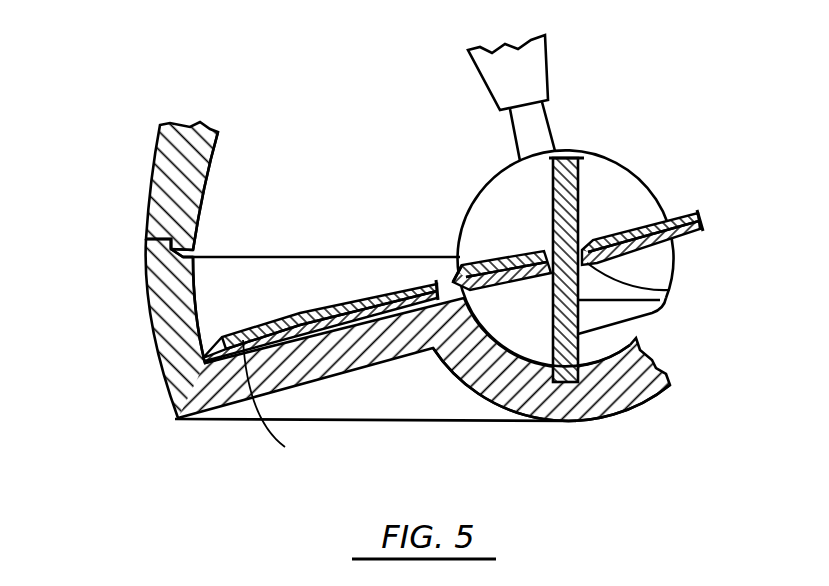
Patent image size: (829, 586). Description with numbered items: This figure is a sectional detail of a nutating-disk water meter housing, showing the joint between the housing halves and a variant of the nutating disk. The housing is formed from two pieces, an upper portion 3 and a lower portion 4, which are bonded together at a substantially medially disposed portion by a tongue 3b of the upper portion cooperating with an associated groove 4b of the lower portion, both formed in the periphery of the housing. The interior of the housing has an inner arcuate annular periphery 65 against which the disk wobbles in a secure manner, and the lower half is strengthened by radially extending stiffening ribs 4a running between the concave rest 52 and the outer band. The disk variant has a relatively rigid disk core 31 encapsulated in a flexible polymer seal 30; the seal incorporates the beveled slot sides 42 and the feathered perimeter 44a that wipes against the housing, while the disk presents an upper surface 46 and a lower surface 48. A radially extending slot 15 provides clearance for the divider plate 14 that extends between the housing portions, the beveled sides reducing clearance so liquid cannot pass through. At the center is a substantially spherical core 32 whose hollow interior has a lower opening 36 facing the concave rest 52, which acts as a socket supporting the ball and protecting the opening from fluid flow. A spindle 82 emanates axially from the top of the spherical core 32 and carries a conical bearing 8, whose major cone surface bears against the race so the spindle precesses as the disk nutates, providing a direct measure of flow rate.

The upper portion 3 is at (152, 165).
The inner arcuate annular periphery 65 is at (205, 155).
The groove 4b is at (167, 242).
The tongue 3b is at (180, 247).
The lower portion 4 is at (150, 315).
The stiffening ribs 4a is at (432, 402).
The feathered perimeter 44a is at (207, 343).
The upper surface 46 is at (243, 340).
The lower surface 48 is at (281, 398).
The flexible polymer seal 30 is at (337, 306).
The disk core 31 is at (463, 275).
The conical bearing 8 is at (480, 77).
The spindle 82 is at (510, 135).
The spherical core 32 is at (593, 155).
The beveled slot sides 42 is at (543, 248).
The slot 15 is at (670, 290).
The divider plate 14 is at (660, 300).
The lower opening 36 is at (643, 323).
The concave rest 52 is at (637, 403).